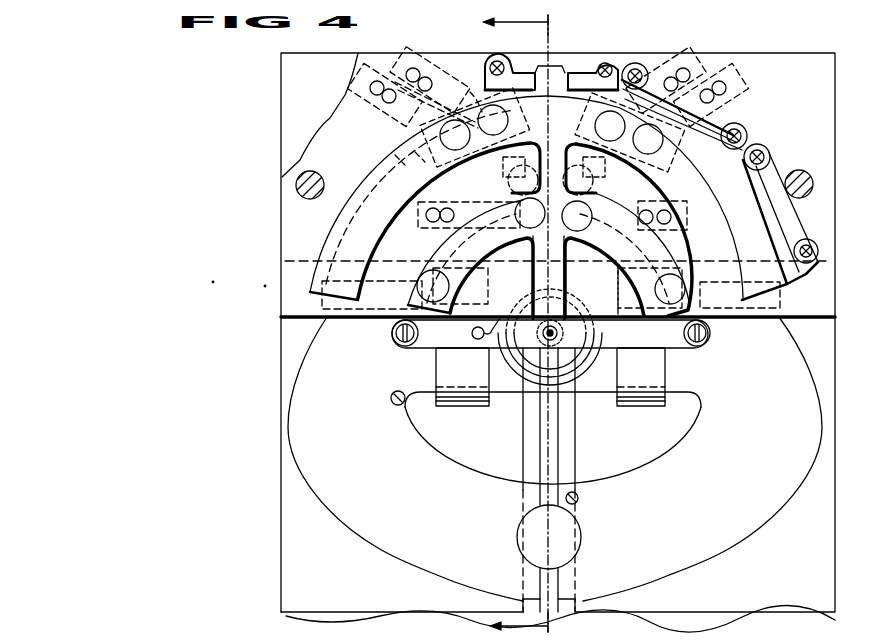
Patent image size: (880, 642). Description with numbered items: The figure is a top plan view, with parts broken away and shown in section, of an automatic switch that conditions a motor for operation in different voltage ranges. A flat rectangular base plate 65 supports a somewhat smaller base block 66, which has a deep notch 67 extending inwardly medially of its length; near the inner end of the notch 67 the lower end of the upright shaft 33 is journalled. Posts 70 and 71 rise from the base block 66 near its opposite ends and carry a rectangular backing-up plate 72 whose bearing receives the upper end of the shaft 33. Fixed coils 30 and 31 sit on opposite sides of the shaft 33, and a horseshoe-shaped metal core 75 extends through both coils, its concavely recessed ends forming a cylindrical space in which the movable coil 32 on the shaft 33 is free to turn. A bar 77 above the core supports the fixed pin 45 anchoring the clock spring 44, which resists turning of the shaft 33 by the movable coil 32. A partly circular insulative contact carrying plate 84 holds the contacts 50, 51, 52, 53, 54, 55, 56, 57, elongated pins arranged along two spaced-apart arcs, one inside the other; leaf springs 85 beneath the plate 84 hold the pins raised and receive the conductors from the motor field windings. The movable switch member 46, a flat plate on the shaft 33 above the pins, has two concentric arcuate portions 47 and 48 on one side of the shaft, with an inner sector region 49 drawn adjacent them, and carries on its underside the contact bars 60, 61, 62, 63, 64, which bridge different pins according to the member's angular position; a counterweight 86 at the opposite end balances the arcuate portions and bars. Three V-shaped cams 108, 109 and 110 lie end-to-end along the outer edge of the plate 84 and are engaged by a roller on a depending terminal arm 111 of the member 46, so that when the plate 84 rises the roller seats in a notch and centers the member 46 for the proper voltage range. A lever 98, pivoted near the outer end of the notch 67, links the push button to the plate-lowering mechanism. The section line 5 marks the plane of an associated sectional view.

The section line 5- 5 is at (525, 321).
The fixed coil 30 is at (437, 380).
The fixed coil 31 is at (642, 403).
The movable coil 32 is at (578, 392).
The shaft 33 is at (582, 370).
The clock spring 44 is at (602, 340).
The fixed pin or abutment 45 is at (472, 333).
The movable switch member 46 is at (514, 262).
The arcuate portion 47 is at (400, 147).
The arcuate portion 48 is at (636, 208).
The left inner sector 49 is at (490, 288).
The contact 50 is at (490, 162).
The contact 51 is at (502, 115).
The contact 52 is at (606, 168).
The contact 53 is at (660, 150).
The contact 54 is at (430, 280).
The contact 55 is at (520, 205).
The contact 56 is at (580, 228).
The contact 57 is at (680, 268).
The contact bar 60 is at (330, 258).
The contact bar 61 is at (470, 86).
The contact bar 62 is at (598, 106).
The contact bar 63 is at (440, 245).
The contact bar 64 is at (618, 262).
The base plate 65 is at (286, 616).
The base block 66 is at (282, 516).
The notch or slot 67 is at (534, 448).
The post 70 is at (330, 166).
The post 71 is at (806, 170).
The backing-up plate 72 is at (281, 148).
The metal core 75 is at (386, 543).
The bar 77 is at (430, 348).
The contact carrying plate 84 is at (282, 320).
The leaf spring 85 is at (352, 72).
The counterweight 86 is at (520, 542).
The lever 98 is at (556, 600).
The V-shaped cam 108 is at (525, 66).
The V-shaped cam 109 is at (748, 100).
The V-shaped cam 110 is at (790, 235).
The terminal arm 111 is at (555, 66).